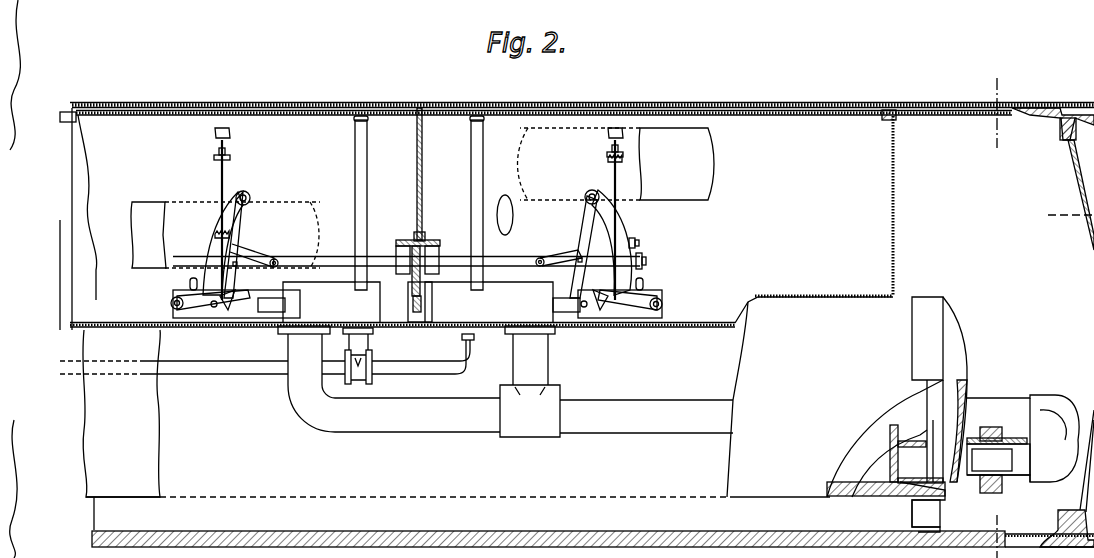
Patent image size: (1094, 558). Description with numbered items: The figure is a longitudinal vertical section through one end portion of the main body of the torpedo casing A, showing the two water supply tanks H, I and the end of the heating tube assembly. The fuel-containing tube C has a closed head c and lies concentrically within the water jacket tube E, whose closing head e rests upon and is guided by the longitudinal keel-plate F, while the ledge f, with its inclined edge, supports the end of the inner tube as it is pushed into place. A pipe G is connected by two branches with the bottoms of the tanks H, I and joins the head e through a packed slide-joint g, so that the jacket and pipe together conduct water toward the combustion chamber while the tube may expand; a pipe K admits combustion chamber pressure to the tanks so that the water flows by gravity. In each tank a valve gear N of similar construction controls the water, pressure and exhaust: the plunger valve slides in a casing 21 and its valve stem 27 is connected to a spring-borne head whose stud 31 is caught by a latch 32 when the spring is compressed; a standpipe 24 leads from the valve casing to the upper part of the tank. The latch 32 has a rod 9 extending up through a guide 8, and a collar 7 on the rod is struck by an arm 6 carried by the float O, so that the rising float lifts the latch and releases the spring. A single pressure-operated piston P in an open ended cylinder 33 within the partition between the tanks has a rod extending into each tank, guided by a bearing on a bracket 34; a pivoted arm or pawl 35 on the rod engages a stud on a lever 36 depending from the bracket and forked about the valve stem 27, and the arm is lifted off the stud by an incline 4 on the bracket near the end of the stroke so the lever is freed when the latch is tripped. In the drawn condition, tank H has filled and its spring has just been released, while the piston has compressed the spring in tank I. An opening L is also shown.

The torpedo casing A is at (268, 102).
The incline 4 is at (1045, 315).
The water tank I is at (246, 218).
The water tank H is at (825, 203).
The float O is at (422, 198).
The standpipe 24 is at (367, 181).
The cylinder 33 is at (432, 240).
The pressure-operated piston P is at (398, 252).
The valve casing 21 is at (418, 302).
The valve stem 27 is at (556, 304).
The link or rod 9 is at (220, 186).
The guide 8 is at (230, 132).
The collar 7 is at (231, 158).
The arm 6 is at (214, 237).
The bracket 34 is at (630, 244).
The lever 36 is at (585, 219).
The pivoted arm or pawl 35 is at (560, 256).
The valve gear N is at (417, 295).
The latch 32 is at (205, 300).
The stud 31 is at (214, 310).
The opening L is at (512, 228).
The pipe G is at (286, 350).
The pipe K is at (212, 372).
The water jacket tube E is at (788, 497).
The keel-plate F is at (862, 540).
The closing head e is at (963, 357).
The fuel-containing tube C is at (850, 455).
The closed head c is at (893, 460).
The ledge f is at (946, 495).
The packed slide-joint g is at (1003, 480).